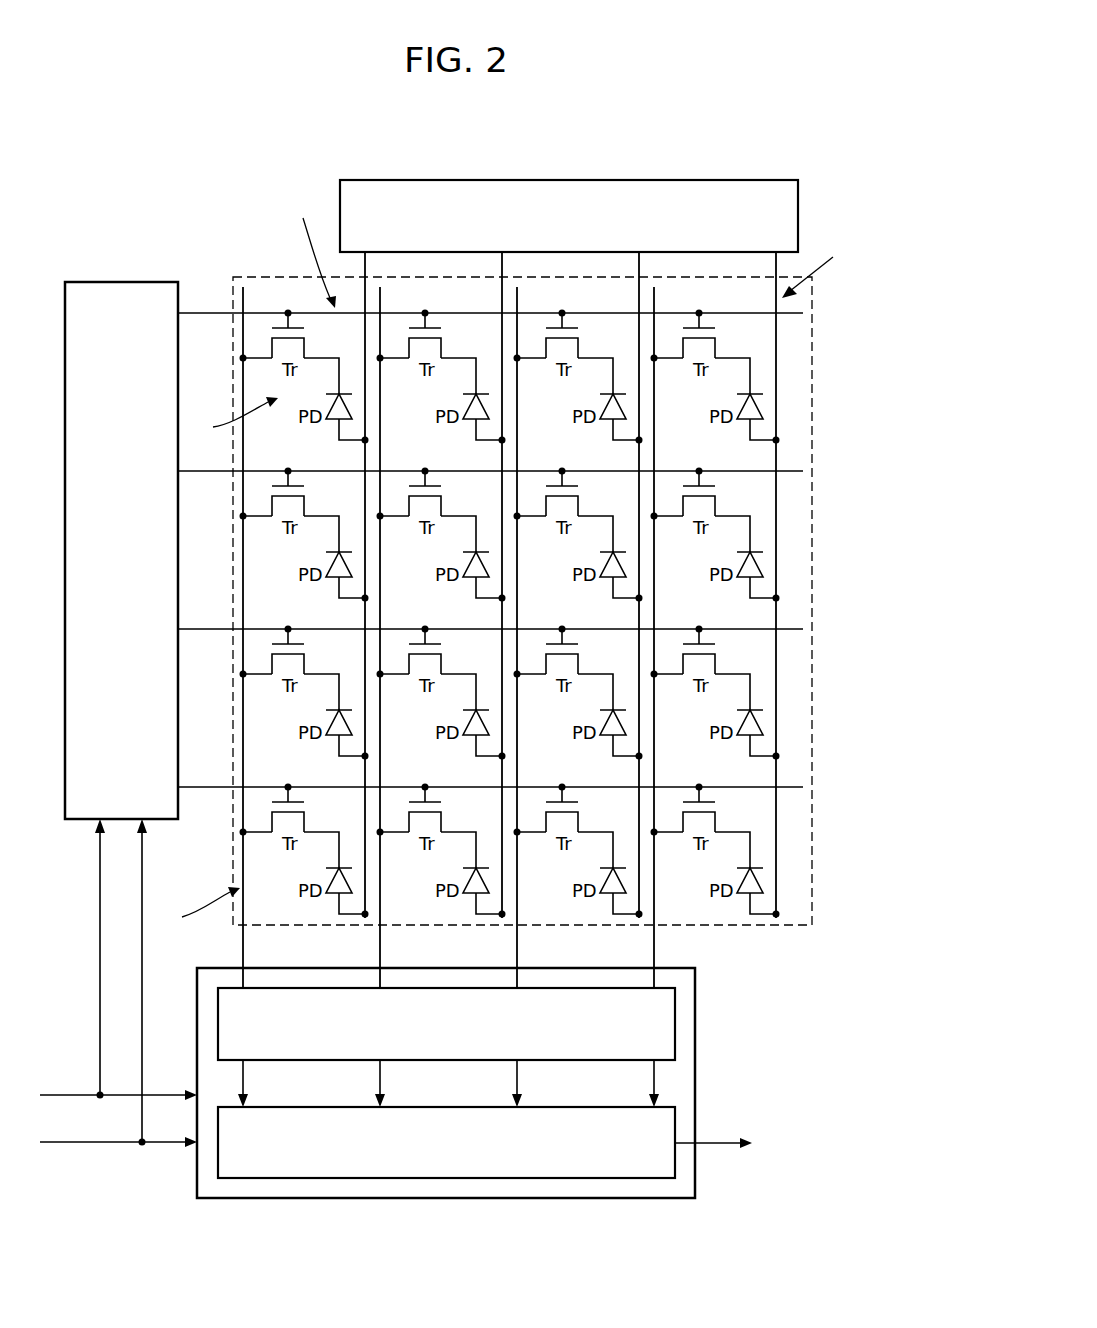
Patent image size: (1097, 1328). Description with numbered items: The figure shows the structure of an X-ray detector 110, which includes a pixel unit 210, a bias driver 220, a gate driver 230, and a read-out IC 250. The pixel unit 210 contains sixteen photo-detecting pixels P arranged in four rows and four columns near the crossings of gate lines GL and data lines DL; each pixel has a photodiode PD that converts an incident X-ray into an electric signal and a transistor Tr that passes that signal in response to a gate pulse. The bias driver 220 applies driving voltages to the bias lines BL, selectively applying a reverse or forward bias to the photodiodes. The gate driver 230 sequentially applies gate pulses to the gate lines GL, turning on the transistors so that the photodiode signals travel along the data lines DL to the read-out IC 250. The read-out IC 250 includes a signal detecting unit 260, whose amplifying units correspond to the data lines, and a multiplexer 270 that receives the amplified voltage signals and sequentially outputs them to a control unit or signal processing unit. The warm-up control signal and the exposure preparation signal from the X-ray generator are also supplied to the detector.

The X-ray detector 110 is at (719, 151).
The pixel unit 210 is at (265, 273).
The bias driver 220 is at (577, 179).
The gate driver 230 is at (128, 282).
The read-out IC 250 is at (698, 983).
The signal detecting unit 260 is at (675, 1025).
The multiplexer 270 is at (675, 1128).